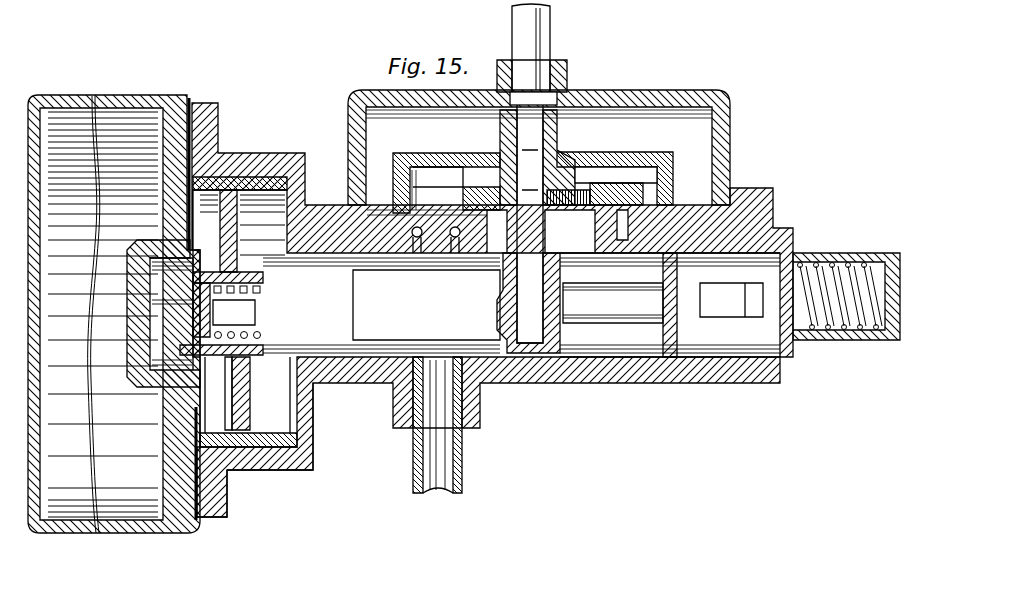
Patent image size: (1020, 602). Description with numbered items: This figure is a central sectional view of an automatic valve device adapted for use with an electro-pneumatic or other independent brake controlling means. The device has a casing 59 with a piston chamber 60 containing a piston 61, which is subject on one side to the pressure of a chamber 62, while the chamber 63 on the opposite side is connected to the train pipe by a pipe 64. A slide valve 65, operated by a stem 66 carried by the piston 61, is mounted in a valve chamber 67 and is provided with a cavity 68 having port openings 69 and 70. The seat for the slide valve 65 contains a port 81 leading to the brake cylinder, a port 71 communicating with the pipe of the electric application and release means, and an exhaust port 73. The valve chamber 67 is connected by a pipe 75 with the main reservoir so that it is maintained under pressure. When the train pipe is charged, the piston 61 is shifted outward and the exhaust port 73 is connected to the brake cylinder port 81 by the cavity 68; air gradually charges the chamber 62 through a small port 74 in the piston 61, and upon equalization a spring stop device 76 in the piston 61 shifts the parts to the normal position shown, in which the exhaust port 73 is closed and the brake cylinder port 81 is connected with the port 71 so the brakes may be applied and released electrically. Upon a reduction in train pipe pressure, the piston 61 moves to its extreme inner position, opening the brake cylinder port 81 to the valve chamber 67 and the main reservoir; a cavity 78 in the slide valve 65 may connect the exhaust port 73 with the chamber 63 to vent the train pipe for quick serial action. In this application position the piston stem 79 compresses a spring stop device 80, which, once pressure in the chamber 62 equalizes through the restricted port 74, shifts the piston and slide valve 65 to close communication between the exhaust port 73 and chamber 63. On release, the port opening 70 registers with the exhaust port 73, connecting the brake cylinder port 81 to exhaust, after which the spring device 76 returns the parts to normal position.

The casing 59 is at (260, 470).
The piston chamber 60 is at (300, 413).
The piston 61 is at (240, 372).
The chamber 62 is at (148, 482).
The chamber 63 is at (623, 345).
The pipe 64 is at (443, 447).
The slide valve 65 is at (640, 133).
The stem 66 is at (519, 140).
The valve chamber 67 is at (700, 143).
The cavity 68 is at (585, 175).
The port opening 69 is at (432, 200).
The port opening 70 is at (657, 192).
The port 71 is at (456, 255).
The exhaust port 73 is at (623, 241).
The small port 74 is at (240, 393).
The pipe 75 is at (550, 42).
The spring stop device 76 is at (173, 320).
The cavity 78 is at (566, 205).
The piston stem 79 is at (597, 300).
The spring stop device 80 is at (722, 300).
The port 81 is at (417, 255).